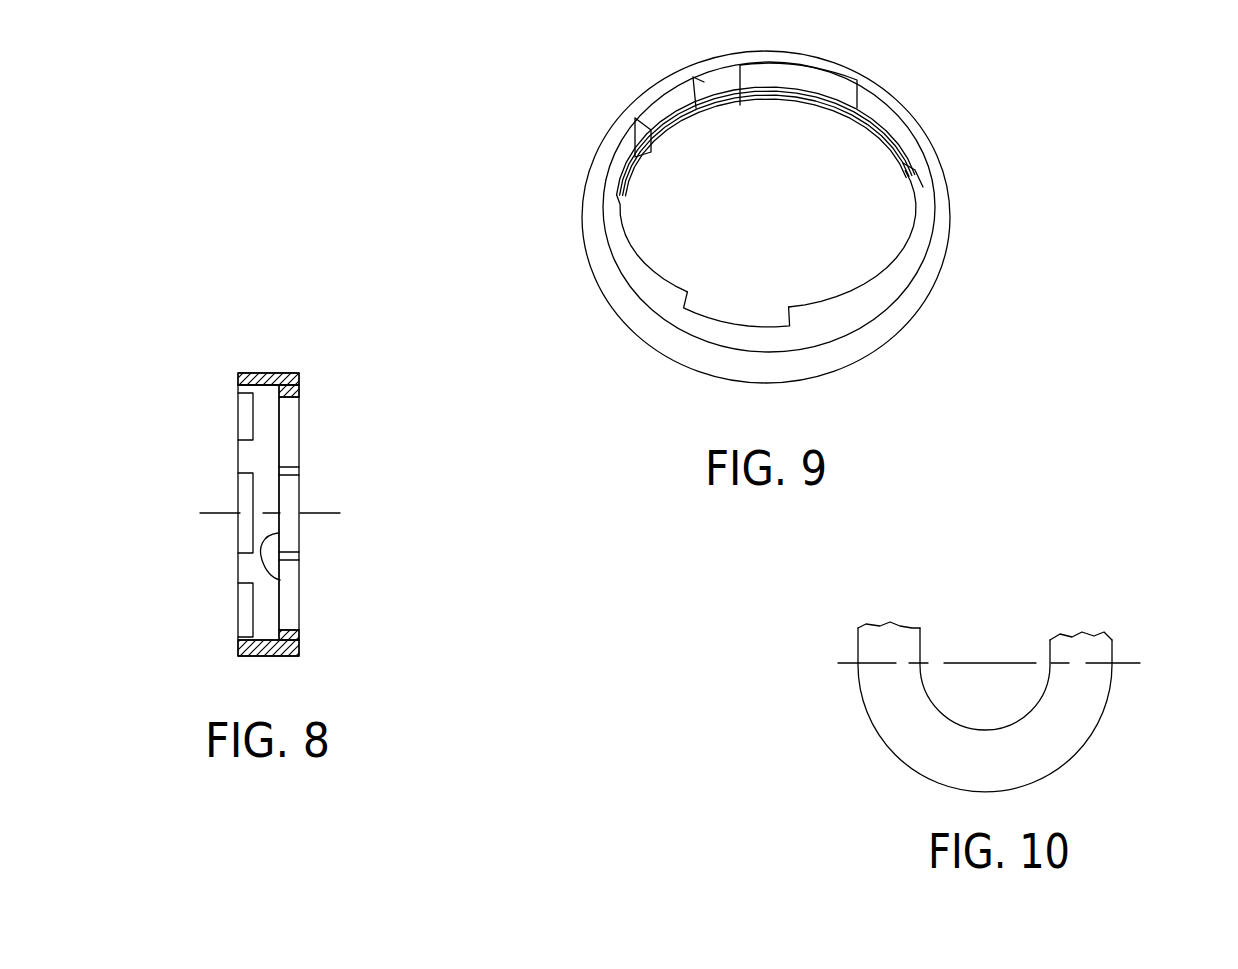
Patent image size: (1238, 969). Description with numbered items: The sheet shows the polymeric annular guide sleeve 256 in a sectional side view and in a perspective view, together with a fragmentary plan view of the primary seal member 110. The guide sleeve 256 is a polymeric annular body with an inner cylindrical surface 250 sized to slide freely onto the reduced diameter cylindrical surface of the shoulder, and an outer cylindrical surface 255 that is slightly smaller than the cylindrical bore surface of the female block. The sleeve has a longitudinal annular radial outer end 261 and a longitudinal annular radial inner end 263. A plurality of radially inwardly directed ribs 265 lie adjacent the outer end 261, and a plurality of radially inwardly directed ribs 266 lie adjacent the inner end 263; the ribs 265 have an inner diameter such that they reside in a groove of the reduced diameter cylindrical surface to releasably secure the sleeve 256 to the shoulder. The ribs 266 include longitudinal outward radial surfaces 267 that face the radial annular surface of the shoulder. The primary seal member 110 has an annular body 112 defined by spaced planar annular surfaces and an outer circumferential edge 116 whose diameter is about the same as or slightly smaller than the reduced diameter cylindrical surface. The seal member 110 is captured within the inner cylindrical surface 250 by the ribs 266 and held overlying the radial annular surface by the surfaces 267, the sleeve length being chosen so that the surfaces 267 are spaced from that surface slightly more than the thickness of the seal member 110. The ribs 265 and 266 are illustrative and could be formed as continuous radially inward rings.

In FIG. 10, the primary seal member 110 is at (1110, 711).
In FIG. 10, the annular body 112 is at (1062, 730).
In FIG. 10, the outer circumferential edge 116 is at (1046, 782).
In FIG. 8, the inner cylindrical surface 250 is at (277, 392).
In FIG. 9, the inner cylindrical surface 250 is at (806, 78).
In FIG. 8, the outer cylindrical surface 255 is at (254, 378).
In FIG. 9, the outer cylindrical surface 255 is at (684, 346).
In FIG. 8, the polymeric annular guide sleeve 256 is at (235, 548).
In FIG. 9, the polymeric annular guide sleeve 256 is at (768, 367).
In FIG. 8, the longitudinal annular radial outer end 261 is at (240, 378).
In FIG. 8, the longitudinal annular radial inner end 263 is at (300, 386).
In FIG. 9, the longitudinal annular radial inner end 263 is at (878, 292).
In FIG. 8, the radially inwardly directed ribs 265 is at (246, 416).
In FIG. 9, the radially inwardly directed ribs 265 is at (788, 90).
In FIG. 8, the radially inwardly directed ribs 266 is at (292, 442).
In FIG. 9, the radially inwardly directed ribs 266 is at (693, 78).
In FIG. 8, the longitudinal outward radial surfaces 267 is at (280, 580).